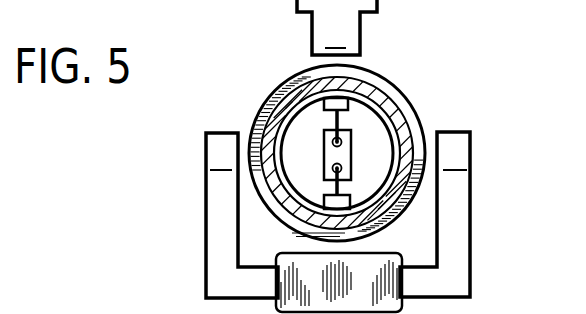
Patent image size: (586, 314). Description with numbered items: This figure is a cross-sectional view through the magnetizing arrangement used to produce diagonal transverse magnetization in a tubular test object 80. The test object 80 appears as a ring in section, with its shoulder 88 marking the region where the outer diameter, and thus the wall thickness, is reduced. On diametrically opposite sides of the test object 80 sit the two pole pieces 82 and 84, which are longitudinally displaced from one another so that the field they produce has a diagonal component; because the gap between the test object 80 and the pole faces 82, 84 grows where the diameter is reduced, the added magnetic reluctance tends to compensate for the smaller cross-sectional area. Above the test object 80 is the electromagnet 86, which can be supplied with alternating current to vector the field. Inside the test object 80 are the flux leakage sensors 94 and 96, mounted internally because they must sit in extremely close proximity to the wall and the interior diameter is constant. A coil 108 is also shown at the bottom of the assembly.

The test object 80 is at (399, 90).
The pole piece 82 is at (470, 149).
The pole piece 84 is at (205, 155).
The electromagnet 86 is at (360, 33).
The shoulder 88 is at (274, 92).
The sensor 94 is at (349, 103).
The sensor 96 is at (352, 201).
The coil 108 is at (424, 283).